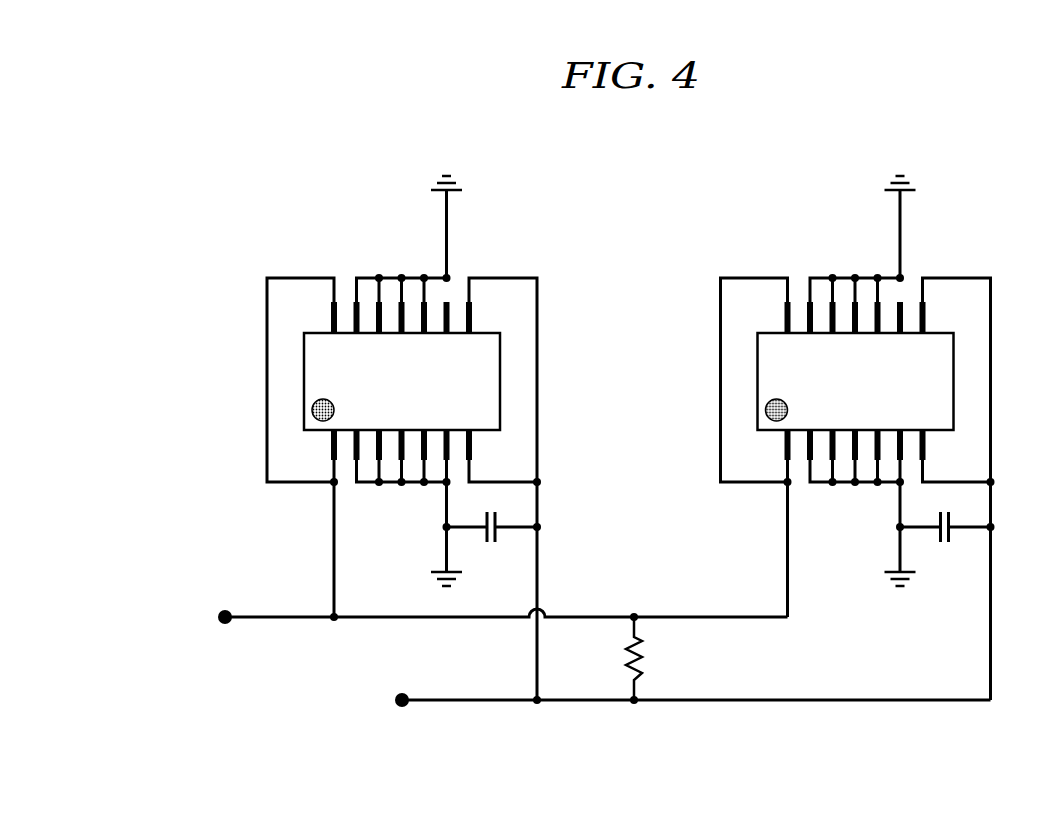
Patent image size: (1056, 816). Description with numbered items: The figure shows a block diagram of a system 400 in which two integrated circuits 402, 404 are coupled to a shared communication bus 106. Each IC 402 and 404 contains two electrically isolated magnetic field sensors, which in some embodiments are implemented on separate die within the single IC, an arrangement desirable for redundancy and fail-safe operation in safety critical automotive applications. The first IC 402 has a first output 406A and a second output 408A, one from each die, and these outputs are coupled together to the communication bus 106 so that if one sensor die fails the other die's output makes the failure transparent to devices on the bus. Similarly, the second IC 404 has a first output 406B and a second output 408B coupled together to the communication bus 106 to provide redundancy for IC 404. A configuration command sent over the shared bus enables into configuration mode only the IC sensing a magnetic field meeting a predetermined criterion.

The system 400 is at (646, 151).
The integrated circuit 402 is at (381, 252).
The integrated circuit 404 is at (834, 252).
The first output 406A is at (334, 447).
The first output 406B is at (788, 447).
The second output 408A is at (334, 276).
The second output 408B is at (788, 276).
The communication bus 106 is at (258, 603).